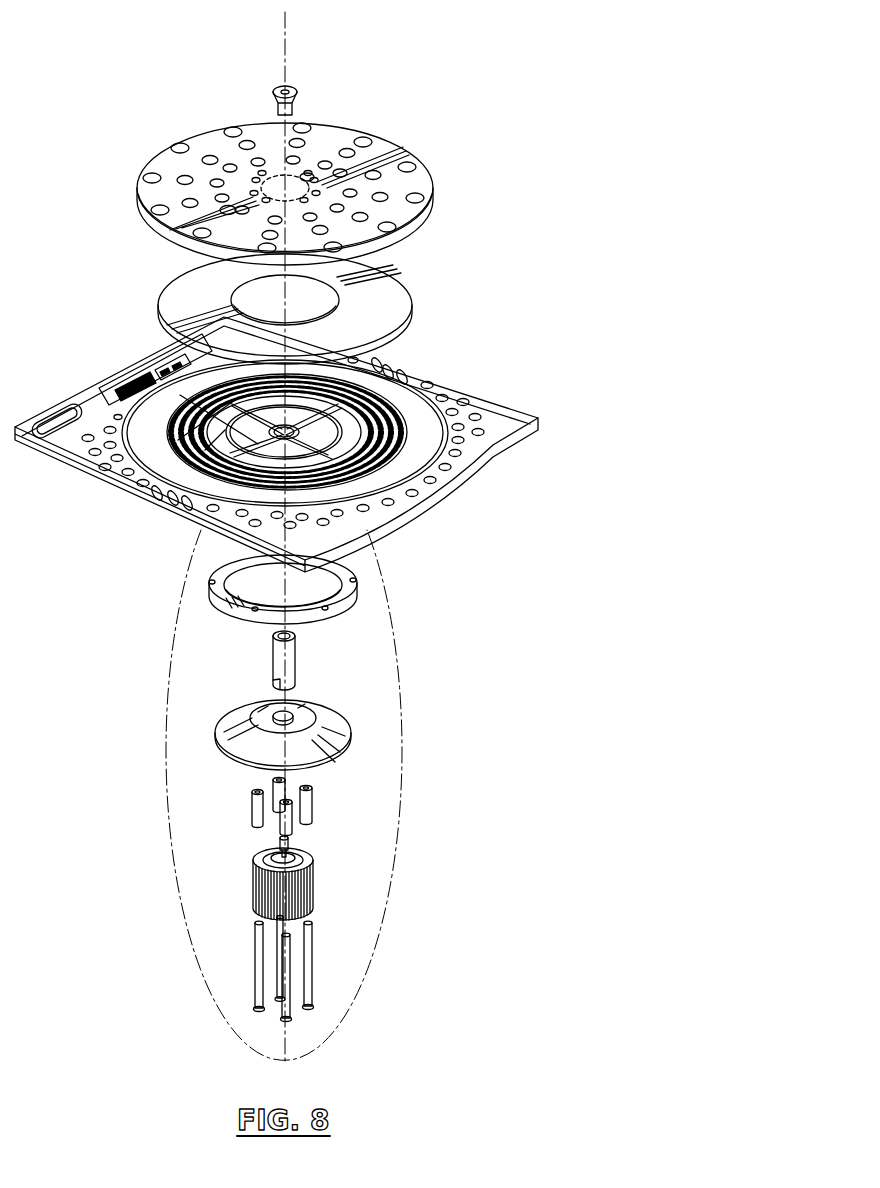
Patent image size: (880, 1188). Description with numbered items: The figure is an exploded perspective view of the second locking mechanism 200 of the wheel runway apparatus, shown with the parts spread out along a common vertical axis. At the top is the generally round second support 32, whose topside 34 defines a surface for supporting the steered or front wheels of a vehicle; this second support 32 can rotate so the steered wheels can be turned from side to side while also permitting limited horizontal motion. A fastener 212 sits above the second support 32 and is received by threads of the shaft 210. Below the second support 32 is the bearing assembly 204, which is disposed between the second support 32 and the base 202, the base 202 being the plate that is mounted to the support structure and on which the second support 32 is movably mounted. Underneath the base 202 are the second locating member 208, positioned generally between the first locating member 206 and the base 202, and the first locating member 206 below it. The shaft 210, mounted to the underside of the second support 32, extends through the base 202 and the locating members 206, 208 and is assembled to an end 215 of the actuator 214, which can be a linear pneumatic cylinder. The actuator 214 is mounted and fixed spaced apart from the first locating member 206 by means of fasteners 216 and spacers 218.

The second locking mechanism 200 is at (165, 718).
The base 202 is at (497, 403).
The bearing assembly 204 is at (412, 300).
The first locating member 206 is at (351, 733).
The second locating member 208 is at (358, 591).
The shaft 210 is at (297, 655).
The fastener 212 is at (275, 88).
The actuator 214 is at (313, 882).
The end of actuator 215 is at (290, 845).
The fasteners 216 is at (313, 970).
The spacers 218 is at (313, 800).
The second support 32 is at (403, 148).
The topside 34 is at (285, 187).